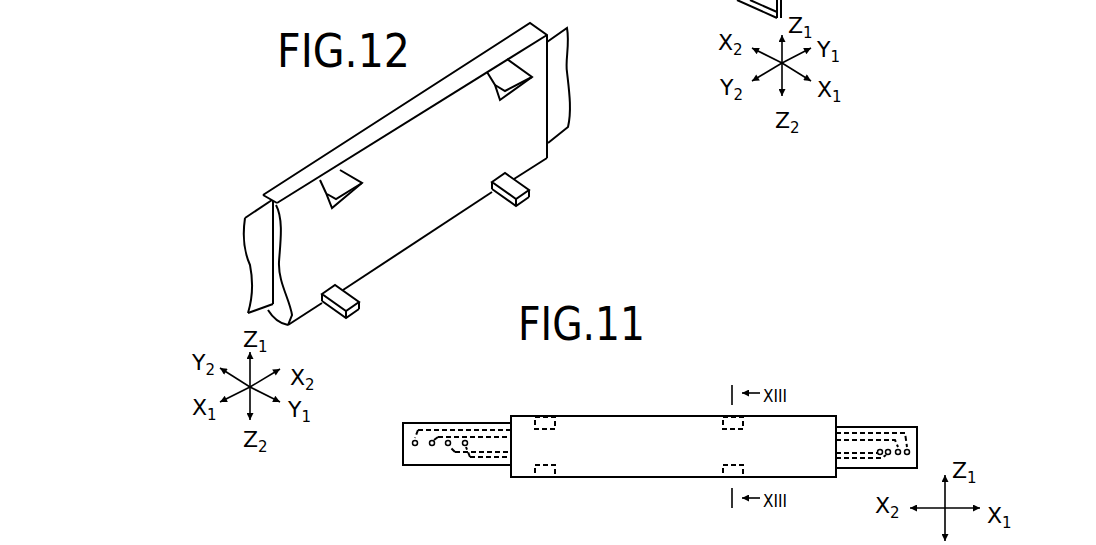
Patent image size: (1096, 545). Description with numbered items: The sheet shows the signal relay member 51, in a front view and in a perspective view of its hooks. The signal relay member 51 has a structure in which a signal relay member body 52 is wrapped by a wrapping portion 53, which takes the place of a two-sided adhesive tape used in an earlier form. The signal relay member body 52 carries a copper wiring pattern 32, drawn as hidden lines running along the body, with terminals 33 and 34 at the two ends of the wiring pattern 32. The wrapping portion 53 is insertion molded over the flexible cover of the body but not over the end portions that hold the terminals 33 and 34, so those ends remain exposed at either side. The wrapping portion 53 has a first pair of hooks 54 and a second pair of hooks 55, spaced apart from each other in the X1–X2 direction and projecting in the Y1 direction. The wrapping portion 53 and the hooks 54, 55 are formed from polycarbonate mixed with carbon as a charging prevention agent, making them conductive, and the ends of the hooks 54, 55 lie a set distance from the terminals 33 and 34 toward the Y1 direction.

In FIG. 11, the signal relay member 51 is at (838, 372).
In FIG. 12, the signal relay member body 52 is at (568, 72).
In FIG. 11, the signal relay member body 52 is at (908, 424).
In FIG. 12, the wrapping portion 53 is at (461, 66).
In FIG. 11, the wrapping portion 53 is at (623, 478).
In FIG. 12, the first pair of hooks 54 is at (541, 203).
In FIG. 11, the first pair of hooks 54 is at (542, 413).
In FIG. 12, the second pair of hooks 55 is at (373, 314).
In FIG. 11, the second pair of hooks 55 is at (723, 417).
In FIG. 11, the wiring pattern 32 is at (483, 456).
In FIG. 12, the terminal 33 is at (732, 2).
In FIG. 11, the terminal 33 is at (910, 450).
In FIG. 11, the terminal 34 is at (430, 447).